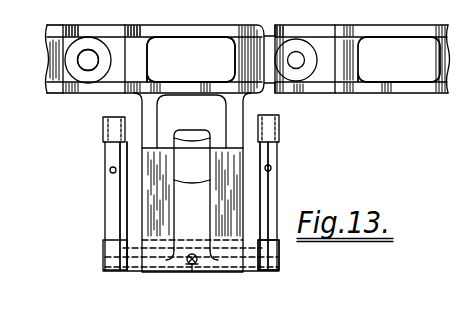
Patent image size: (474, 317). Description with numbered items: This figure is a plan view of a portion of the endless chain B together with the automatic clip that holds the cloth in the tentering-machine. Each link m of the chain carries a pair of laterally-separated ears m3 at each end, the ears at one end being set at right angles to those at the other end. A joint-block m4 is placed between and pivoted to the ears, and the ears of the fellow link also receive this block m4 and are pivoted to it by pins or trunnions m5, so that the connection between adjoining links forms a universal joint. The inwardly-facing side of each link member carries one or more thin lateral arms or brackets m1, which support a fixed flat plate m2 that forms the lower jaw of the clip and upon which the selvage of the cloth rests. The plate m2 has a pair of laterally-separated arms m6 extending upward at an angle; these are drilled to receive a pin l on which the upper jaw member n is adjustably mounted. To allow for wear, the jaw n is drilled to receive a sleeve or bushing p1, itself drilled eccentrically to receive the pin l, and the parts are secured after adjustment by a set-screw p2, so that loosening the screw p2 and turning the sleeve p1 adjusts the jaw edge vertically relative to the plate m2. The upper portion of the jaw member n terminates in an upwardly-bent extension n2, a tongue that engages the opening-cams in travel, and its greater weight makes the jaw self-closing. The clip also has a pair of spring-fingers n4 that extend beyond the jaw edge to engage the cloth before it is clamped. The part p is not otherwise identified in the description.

The link m is at (398, 88).
The lateral arm or bracket m1 is at (150, 108).
The flat plate m2 is at (192, 182).
The ears m3 is at (294, 31).
The joint-block m4 is at (154, 68).
The pins or trunnions m5 is at (88, 58).
The arms m6 is at (294, 173).
The upper jaw member n is at (473, 140).
The upwardly-bent extension n2 is at (217, 50).
The spring-fingers n4 is at (292, 193).
The base plate p is at (158, 265).
The sleeve or bushing p1 is at (191, 271).
The set-screw p2 is at (197, 268).
The pin l is at (253, 263).
The endless chain B is at (151, 12).